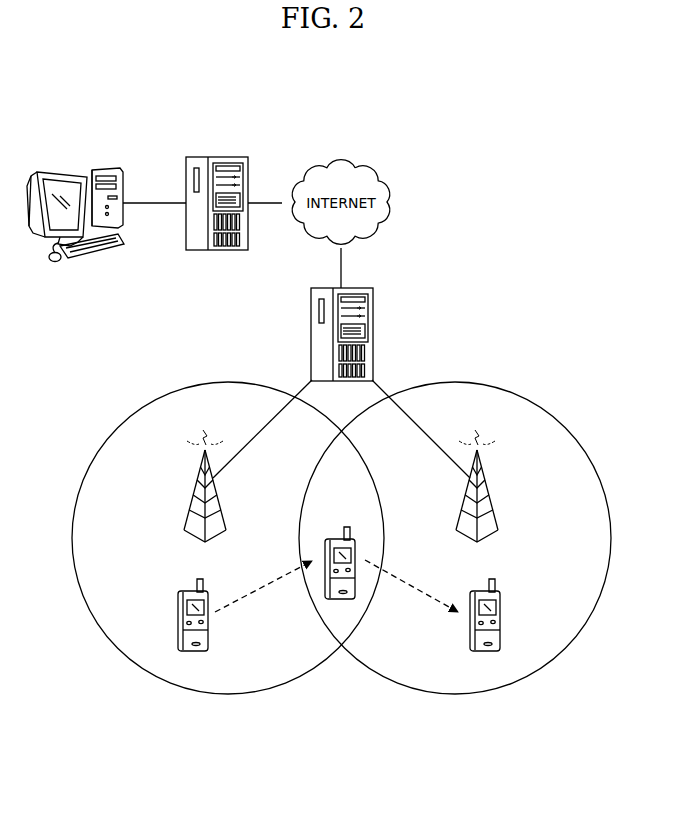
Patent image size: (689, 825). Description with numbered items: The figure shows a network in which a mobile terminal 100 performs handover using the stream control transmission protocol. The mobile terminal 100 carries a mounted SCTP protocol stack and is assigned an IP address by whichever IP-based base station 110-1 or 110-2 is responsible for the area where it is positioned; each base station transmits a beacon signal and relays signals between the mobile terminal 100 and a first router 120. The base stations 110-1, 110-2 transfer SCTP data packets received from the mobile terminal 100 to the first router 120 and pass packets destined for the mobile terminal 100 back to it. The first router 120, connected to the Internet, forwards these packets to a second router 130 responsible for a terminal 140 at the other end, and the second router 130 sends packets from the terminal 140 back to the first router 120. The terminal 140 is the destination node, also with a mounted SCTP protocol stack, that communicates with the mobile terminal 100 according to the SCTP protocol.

The mobile terminal 100 is at (176, 609).
The IP-based base station 110-1 is at (194, 495).
The IP-based base station 110-2 is at (489, 491).
The first router 120 is at (375, 335).
The second router 130 is at (217, 157).
The terminal 140 is at (78, 172).